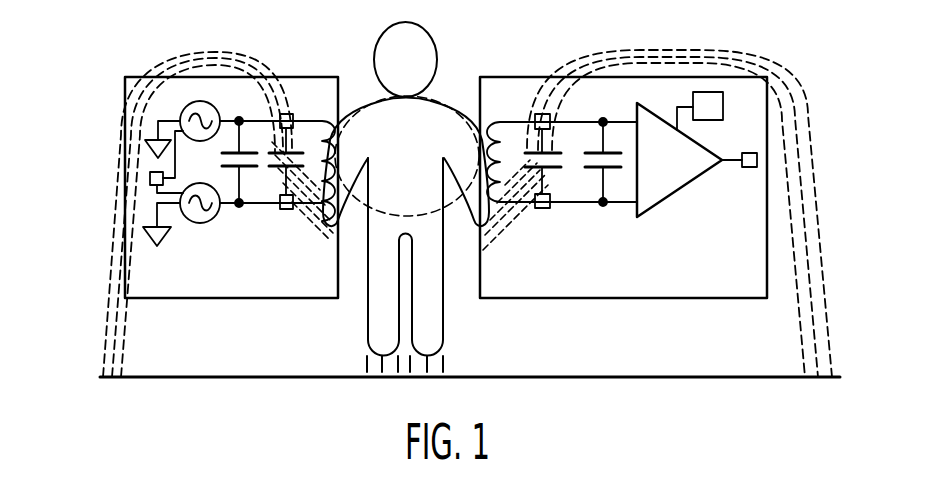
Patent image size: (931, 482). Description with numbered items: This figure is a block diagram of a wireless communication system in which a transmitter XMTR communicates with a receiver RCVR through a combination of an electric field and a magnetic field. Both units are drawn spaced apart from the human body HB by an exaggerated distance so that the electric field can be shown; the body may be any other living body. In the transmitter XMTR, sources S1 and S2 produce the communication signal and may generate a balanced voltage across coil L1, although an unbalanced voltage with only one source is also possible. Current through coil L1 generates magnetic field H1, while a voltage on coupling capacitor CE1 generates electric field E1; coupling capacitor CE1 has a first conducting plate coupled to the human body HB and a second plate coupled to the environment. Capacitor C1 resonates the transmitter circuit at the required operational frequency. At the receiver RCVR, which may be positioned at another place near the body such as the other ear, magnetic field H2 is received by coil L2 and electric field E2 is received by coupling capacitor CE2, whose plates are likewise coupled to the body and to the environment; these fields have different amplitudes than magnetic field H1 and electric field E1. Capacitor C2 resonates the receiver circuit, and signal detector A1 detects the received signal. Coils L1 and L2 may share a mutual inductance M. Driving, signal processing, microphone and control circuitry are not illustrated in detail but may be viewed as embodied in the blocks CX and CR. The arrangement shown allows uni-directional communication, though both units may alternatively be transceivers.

The electric field E1 is at (197, 200).
The electric field E2 is at (679, 200).
The human body HB is at (405, 48).
The receiver block CR is at (723, 108).
The transmitter block CX is at (150, 177).
The coil L1 is at (324, 152).
The coil L2 is at (495, 142).
The magnetic field H1 is at (352, 163).
The magnetic field H2 is at (460, 163).
The signal detector A1 is at (697, 160).
The source S1 is at (182, 136).
The source S2 is at (181, 218).
The capacitor C1 is at (239, 184).
The capacitor C2 is at (603, 185).
The coupling capacitor CE1 is at (301, 179).
The coupling capacitor CE2 is at (522, 182).
The mutual inductance M is at (407, 234).
The transmitter XMTR is at (231, 187).
The receiver RCVR is at (623, 187).